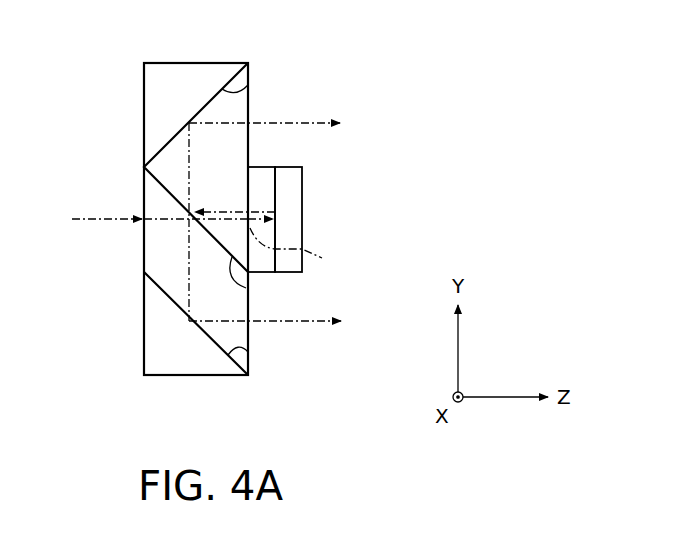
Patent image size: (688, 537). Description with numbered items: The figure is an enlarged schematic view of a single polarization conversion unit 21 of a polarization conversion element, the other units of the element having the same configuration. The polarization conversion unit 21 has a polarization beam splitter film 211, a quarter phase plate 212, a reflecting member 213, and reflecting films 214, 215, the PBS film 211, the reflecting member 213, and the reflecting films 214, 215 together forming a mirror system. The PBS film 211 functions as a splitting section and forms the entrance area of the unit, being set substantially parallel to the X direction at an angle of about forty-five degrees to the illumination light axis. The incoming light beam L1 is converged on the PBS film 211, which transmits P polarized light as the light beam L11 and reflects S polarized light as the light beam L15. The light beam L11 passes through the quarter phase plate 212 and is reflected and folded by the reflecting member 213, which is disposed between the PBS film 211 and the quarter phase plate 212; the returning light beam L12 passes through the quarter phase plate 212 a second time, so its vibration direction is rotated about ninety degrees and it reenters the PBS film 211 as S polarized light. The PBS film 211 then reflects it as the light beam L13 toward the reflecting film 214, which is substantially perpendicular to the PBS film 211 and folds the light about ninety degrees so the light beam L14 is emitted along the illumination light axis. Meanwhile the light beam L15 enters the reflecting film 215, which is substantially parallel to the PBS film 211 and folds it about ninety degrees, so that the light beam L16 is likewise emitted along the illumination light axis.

The polarization conversion unit 21 is at (428, 82).
The polarization beam splitter film 211 is at (246, 288).
The quarter phase plate 212 is at (268, 186).
The reflecting member 213 is at (290, 226).
The reflecting film 214 is at (249, 78).
The reflecting film 215 is at (250, 355).
The light beam L1 is at (93, 217).
The light beam L11 is at (306, 243).
The light beam L12 is at (218, 210).
The light beam L13 is at (188, 150).
The light beam L14 is at (298, 120).
The light beam L15 is at (193, 272).
The light beam L16 is at (303, 323).